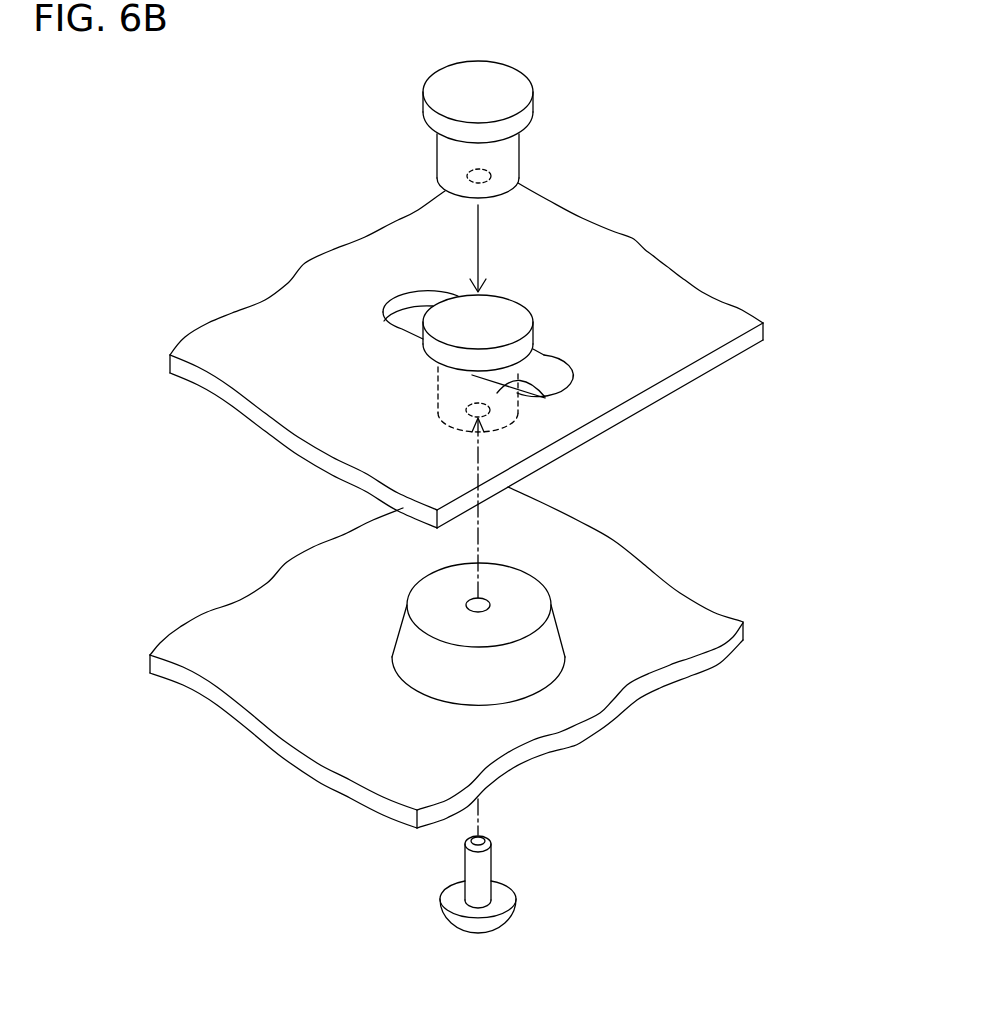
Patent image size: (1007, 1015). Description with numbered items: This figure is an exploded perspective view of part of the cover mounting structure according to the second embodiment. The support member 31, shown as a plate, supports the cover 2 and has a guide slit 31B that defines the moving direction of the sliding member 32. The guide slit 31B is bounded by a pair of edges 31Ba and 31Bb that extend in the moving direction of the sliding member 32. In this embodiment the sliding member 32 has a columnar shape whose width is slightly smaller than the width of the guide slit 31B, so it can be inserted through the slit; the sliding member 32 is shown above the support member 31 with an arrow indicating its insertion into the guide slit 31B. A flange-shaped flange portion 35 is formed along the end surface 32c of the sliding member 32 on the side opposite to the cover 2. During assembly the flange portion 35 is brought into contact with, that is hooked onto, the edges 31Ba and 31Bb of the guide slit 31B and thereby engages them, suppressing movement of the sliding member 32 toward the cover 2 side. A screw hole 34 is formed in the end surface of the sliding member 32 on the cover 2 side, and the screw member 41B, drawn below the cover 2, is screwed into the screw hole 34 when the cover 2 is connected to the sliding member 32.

The cover 2 is at (295, 710).
The support member 31 is at (727, 322).
The guide slit 31B is at (570, 344).
The edge of guide slit 31Ba is at (545, 398).
The edge of guide slit 31Bb is at (549, 381).
The sliding member 32 is at (507, 146).
The end surface of sliding member 32c is at (497, 86).
The screw hole 34 is at (469, 413).
The flange portion 35 is at (530, 78).
The screw member 41B is at (485, 868).